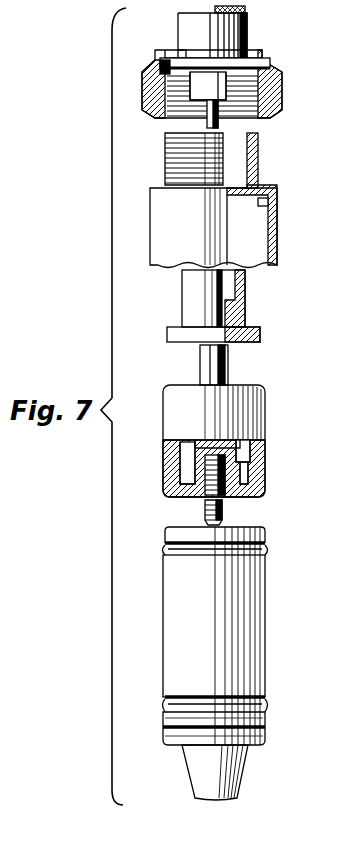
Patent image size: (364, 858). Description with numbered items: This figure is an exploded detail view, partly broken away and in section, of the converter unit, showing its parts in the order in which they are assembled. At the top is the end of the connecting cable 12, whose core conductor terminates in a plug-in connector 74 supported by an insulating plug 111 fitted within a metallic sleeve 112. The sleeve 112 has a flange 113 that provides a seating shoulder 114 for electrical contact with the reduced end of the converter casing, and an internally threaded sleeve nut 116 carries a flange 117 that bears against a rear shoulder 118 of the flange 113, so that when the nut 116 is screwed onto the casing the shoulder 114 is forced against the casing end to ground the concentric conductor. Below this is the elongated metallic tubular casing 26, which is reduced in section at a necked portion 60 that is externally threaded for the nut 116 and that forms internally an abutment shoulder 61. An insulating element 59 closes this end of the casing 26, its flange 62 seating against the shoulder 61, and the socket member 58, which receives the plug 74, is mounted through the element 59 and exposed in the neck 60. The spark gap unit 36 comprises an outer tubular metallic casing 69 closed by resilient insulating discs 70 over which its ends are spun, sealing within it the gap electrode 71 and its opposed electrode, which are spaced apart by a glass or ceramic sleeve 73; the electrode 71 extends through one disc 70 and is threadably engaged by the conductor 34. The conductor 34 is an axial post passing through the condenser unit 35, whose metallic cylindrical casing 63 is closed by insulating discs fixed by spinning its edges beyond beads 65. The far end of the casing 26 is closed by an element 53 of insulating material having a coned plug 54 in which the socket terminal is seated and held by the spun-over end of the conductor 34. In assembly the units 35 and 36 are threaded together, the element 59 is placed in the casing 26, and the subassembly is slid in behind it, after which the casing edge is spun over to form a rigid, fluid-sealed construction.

The connecting cable 12 is at (247, 11).
The metallic sleeve 112 is at (240, 45).
The flange 117 is at (265, 53).
The seating shoulder 114 is at (266, 68).
The sleeve nut 116 is at (282, 90).
The rear shoulder 118 is at (178, 56).
The flange 113 is at (165, 70).
The plug 111 is at (165, 107).
The plug-in connector 74 is at (218, 122).
The necked portion 60 is at (260, 156).
The abutment shoulder 61 is at (267, 206).
The tubular casing 26 is at (280, 230).
The insulating element 59 is at (246, 312).
The flange 62 is at (262, 335).
The socket member 58 is at (230, 370).
The spark gap unit 36 is at (267, 418).
The gap electrode 71 is at (200, 443).
The sleeve 73 is at (250, 443).
The outer tubular metallic casing 69 is at (266, 465).
The insulating disc 70 is at (240, 497).
The conductor 34 is at (222, 520).
The bead 65 is at (265, 548).
The cylindrical casing 63 is at (266, 598).
The condenser unit 35 is at (237, 636).
The element of insulating material 53 is at (265, 738).
The coned plug 54 is at (240, 775).